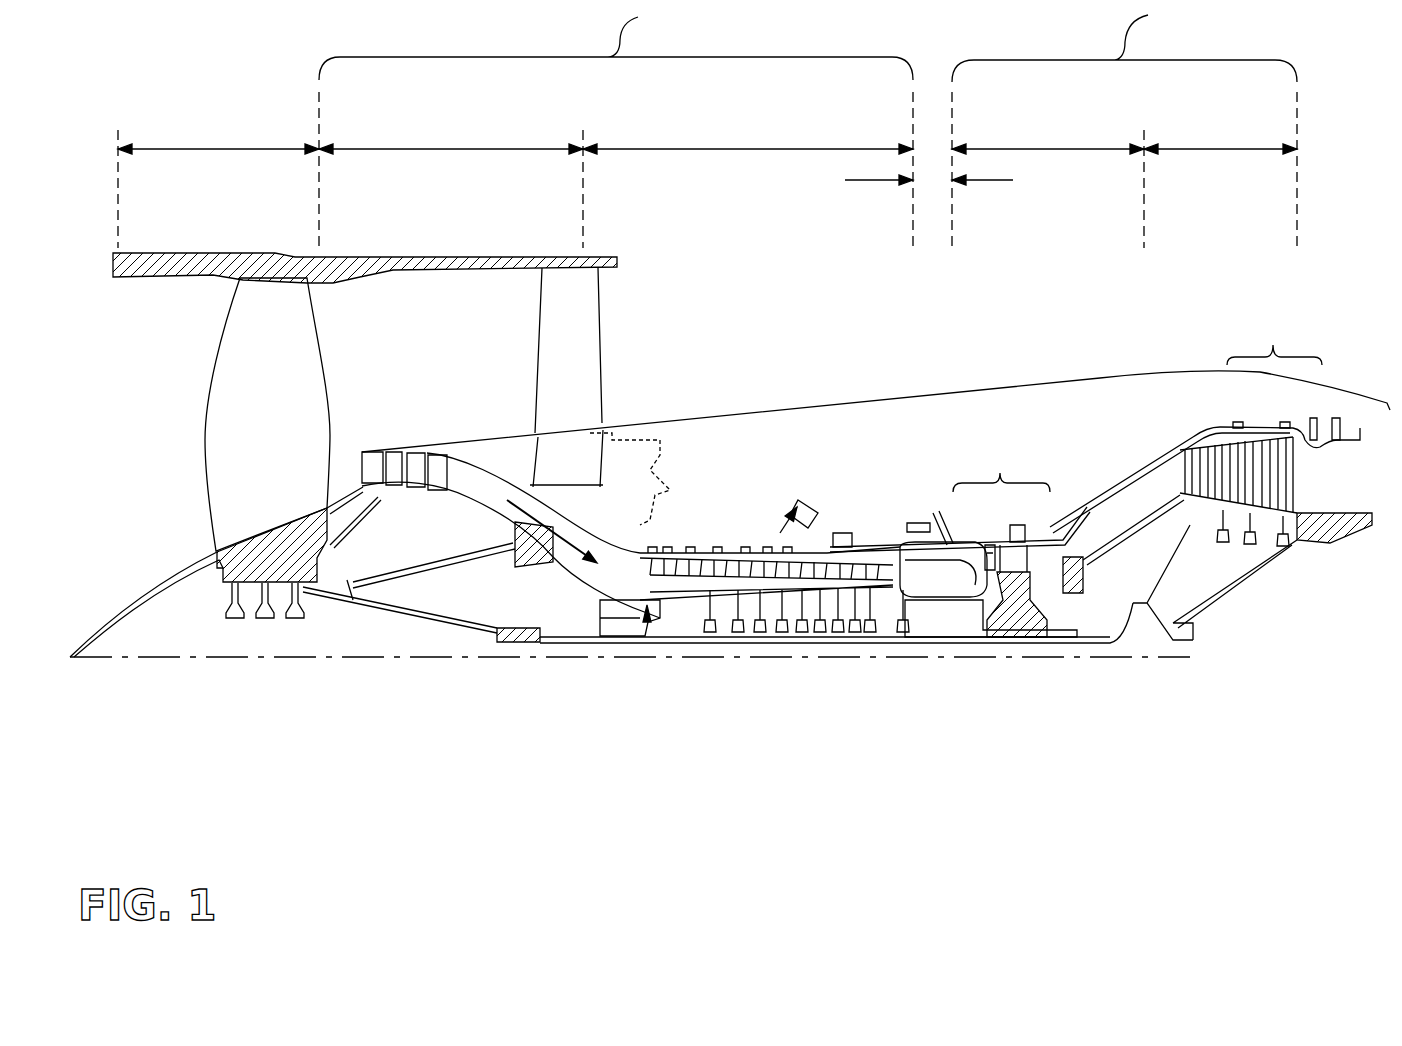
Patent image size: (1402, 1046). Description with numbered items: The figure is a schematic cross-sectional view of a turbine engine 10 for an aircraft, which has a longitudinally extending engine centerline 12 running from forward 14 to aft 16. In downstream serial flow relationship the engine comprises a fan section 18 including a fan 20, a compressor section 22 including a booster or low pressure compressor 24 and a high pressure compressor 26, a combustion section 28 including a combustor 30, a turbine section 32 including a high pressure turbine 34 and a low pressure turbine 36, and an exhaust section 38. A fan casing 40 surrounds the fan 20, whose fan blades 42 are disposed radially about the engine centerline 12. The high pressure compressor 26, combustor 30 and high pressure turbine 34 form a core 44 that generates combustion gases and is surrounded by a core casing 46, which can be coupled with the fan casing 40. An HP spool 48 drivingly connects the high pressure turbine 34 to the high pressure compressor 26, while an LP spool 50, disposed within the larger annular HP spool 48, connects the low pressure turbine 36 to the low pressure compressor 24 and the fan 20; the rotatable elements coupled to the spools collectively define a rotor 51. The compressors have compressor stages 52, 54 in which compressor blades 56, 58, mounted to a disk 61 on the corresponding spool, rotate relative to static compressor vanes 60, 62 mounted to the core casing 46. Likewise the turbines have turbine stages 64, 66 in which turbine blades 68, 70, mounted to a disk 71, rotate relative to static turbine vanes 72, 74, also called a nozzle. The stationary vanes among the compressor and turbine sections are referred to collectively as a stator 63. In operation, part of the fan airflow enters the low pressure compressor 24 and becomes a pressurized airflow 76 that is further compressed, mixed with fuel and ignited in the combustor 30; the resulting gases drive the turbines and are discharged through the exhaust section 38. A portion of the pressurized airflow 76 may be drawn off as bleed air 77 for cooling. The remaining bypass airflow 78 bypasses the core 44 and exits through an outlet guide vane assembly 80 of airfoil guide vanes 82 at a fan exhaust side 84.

The turbine engine 10 is at (1312, 180).
The engine centerline 12 is at (200, 660).
The forward 14 is at (150, 387).
The aft 16 is at (1366, 480).
The fan section 18 is at (218, 149).
The fan 20 is at (195, 505).
The compressor section 22 is at (616, 41).
The low pressure compressor 24 is at (458, 149).
The high pressure compressor 26 is at (748, 149).
The combustion section 28 is at (860, 182).
The combustor 30 is at (953, 557).
The turbine section 32 is at (1124, 43).
The high pressure turbine 34 is at (1048, 149).
The low pressure turbine 36 is at (1220, 149).
The exhaust section 38 is at (1360, 458).
The fan casing 40 is at (355, 253).
The fan blades 42 is at (290, 320).
The core 44 is at (877, 432).
The core casing 46 is at (1127, 473).
The HP shaft or spool 48 is at (917, 613).
The LP shaft or spool 50 is at (517, 643).
The rotor 51 is at (773, 645).
The compressor stages 52 is at (333, 396).
The compressor stages 54 is at (747, 535).
The compressor blades 56 is at (395, 465).
The compressor blades 58 is at (660, 603).
The static compressor vanes 60 is at (378, 460).
The disk 61 is at (412, 493).
The static compressor vanes 62 is at (650, 607).
The stator 63 is at (1198, 427).
The turbine stages 64 is at (1003, 470).
The turbine stages 66 is at (1273, 342).
The turbine blades 68 is at (1003, 540).
The turbine blades 70 is at (1280, 430).
The disk 71 is at (1200, 513).
The static turbine vanes 72 is at (988, 535).
The static turbine vanes 74 is at (1267, 440).
The pressurized airflow 76 is at (553, 552).
The bleed air 77 is at (747, 540).
The bypass airflow 78 is at (640, 328).
The outlet guide vane assembly 80 is at (610, 388).
The airfoil guide vanes 82 is at (548, 365).
The fan exhaust side 84 is at (617, 306).